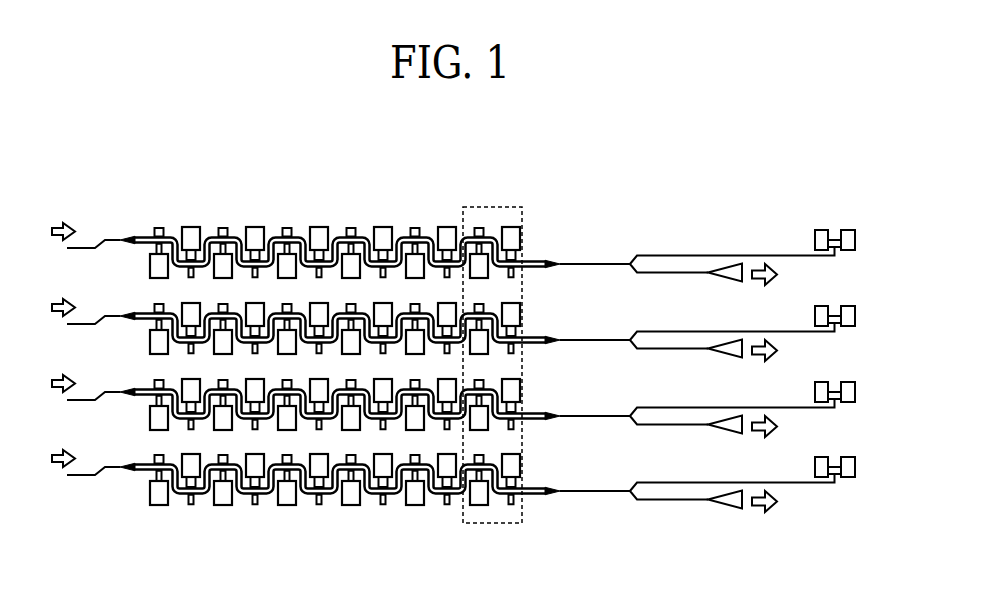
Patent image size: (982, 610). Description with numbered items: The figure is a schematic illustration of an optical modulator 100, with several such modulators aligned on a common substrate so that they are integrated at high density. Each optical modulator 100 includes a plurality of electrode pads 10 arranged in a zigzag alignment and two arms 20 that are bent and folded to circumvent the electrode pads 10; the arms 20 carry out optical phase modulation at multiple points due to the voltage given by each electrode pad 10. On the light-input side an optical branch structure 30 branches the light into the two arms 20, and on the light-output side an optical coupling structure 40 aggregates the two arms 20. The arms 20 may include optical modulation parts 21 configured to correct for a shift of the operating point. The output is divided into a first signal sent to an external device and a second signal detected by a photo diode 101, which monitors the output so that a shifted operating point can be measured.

The optical modulator 100 is at (746, 182).
The electrode pad 10 is at (190, 233).
The arm 20 is at (352, 243).
The optical modulation part 21 is at (488, 525).
The optical branch structure 30 is at (113, 238).
The optical coupling structure 40 is at (560, 262).
The photo diode 101 is at (832, 240).